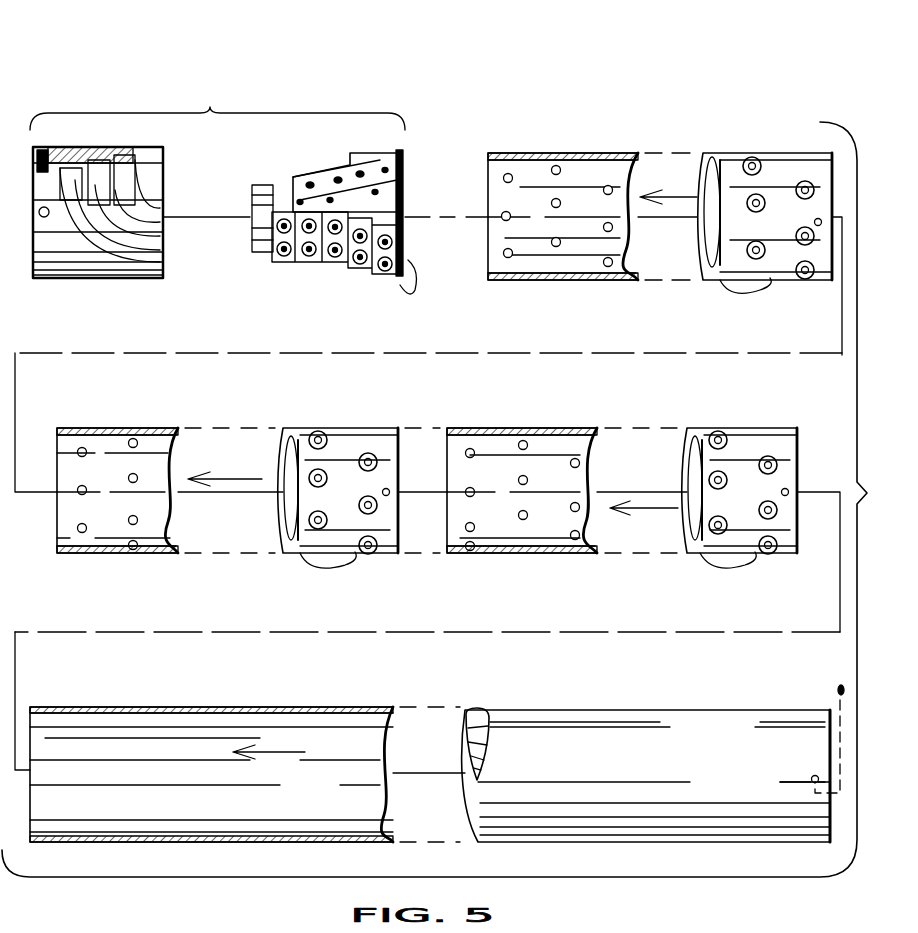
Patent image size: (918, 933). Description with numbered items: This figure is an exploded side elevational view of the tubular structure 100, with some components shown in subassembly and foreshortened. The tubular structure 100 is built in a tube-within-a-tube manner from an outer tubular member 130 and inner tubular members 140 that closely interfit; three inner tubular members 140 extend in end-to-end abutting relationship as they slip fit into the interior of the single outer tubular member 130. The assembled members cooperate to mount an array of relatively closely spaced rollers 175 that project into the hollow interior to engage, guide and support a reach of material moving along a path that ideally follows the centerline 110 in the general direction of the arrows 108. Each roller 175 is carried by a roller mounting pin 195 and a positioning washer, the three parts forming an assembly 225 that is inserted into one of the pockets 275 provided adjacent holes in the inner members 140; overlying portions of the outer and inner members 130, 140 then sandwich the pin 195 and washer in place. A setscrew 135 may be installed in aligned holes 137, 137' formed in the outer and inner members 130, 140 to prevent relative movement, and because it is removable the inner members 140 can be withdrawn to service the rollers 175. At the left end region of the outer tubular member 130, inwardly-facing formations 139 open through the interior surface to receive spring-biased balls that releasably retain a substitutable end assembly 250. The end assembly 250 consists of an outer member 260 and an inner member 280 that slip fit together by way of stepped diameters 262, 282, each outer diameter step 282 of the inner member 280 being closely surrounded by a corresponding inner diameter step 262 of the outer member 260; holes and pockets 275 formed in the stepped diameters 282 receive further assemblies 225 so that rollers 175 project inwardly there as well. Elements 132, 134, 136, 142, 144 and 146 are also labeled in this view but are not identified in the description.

The tubular structure 100 is at (752, 92).
The arrows 108 is at (681, 205).
The centerline 110 is at (417, 204).
The outer tubular member 130 is at (272, 700).
The tube wall 132 is at (714, 697).
The end cap 134 is at (838, 735).
The setscrew 135 is at (840, 688).
The tube body 136 is at (28, 815).
The holes 137 is at (797, 769).
The holes 137' is at (613, 357).
The inwardly-facing formations 139 is at (40, 705).
The inner tubular members 140 is at (464, 400).
The tube section 142 is at (768, 380).
The tube section 144 is at (165, 415).
The tube section 146 is at (822, 100).
The rollers 175 is at (590, 180).
The roller mounting pins 195 is at (760, 286).
The roller assembly 225 is at (792, 190).
The end assembly 250 is at (217, 181).
The outer member 260 is at (83, 295).
The stepped diameters 262 is at (172, 194).
The pockets 275 is at (252, 240).
The inner member 280 is at (296, 284).
The stepped diameters 282 is at (268, 258).